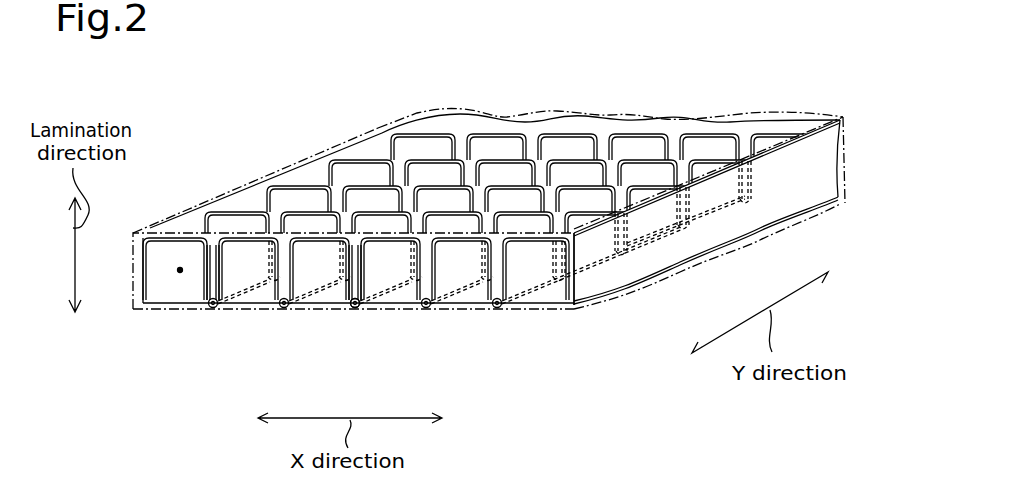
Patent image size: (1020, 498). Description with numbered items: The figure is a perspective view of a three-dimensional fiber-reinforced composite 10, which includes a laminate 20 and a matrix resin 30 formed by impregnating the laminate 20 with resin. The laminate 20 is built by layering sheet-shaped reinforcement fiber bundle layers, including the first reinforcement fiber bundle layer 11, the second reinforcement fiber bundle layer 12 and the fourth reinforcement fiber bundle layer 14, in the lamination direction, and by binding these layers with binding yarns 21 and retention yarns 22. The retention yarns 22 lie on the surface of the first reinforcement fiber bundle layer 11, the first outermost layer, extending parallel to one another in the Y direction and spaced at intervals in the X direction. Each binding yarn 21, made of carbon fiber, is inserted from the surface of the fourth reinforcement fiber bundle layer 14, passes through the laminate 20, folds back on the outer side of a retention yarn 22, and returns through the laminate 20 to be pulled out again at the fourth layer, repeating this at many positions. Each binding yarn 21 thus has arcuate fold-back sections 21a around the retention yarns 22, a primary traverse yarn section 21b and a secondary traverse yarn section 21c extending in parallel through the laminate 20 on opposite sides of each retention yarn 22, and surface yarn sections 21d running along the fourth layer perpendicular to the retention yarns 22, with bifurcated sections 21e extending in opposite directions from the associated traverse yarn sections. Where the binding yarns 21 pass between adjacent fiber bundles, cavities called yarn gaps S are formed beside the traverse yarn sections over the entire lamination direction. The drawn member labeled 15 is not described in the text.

The three-dimensional fiber-reinforced composite 10 is at (808, 95).
The first reinforcement fiber bundle layer 11 is at (607, 106).
The second reinforcement fiber bundle layer 12 is at (180, 270).
The fourth reinforcement fiber bundle layer 14 is at (495, 135).
The connecting member 15 is at (270, 290).
The laminate 20 is at (577, 310).
The binding yarn 21 is at (295, 183).
The fold-back section 21a is at (356, 308).
The primary traverse yarn section 21b is at (347, 272).
The secondary traverse yarn section 21c is at (362, 277).
The surface yarn section 21d is at (228, 232).
The bifurcated section 21e is at (212, 231).
The retention yarn 22 is at (447, 305).
The matrix resin 30 is at (145, 312).
The yarn gap S is at (290, 278).